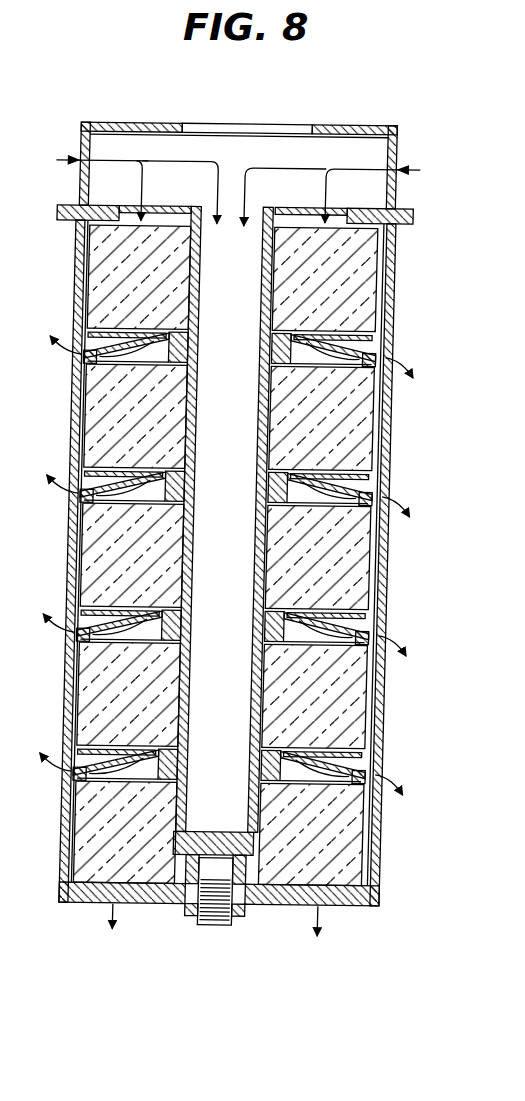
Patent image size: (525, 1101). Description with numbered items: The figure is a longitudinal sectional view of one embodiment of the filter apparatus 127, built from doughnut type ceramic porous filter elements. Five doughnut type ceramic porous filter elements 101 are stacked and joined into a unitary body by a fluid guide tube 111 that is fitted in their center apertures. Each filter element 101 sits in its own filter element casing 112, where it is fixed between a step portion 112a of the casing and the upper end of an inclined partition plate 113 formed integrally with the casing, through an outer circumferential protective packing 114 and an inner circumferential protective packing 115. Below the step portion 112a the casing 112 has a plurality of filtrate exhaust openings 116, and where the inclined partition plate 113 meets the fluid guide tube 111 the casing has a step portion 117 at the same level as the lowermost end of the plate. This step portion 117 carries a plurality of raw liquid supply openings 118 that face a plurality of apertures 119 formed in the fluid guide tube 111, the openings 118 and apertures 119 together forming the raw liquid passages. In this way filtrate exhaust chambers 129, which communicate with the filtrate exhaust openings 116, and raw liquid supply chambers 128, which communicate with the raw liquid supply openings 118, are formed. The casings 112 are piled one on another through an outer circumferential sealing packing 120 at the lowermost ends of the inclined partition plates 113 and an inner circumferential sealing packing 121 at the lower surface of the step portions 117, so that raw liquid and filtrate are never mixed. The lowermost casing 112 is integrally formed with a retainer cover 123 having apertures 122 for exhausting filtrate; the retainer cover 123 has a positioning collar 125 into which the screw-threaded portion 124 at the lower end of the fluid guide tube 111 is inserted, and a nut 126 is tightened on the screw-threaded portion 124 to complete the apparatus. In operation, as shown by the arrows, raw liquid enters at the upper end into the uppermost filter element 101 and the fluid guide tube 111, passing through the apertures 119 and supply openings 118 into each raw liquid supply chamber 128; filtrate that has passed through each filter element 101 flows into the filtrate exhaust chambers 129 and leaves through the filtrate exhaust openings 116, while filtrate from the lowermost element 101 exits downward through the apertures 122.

The doughnut type ceramic porous filter element 101 is at (362, 272).
The fluid guide tube 111 is at (258, 736).
The filter element casing 112 is at (390, 552).
The step portion of the filter element casing 112a is at (386, 338).
The inclined partition plate 113 is at (386, 350).
The outer circumferential protective packing 114 is at (358, 467).
The inner circumferential protective packing 115 is at (370, 447).
The filtrate exhaust opening 116 is at (386, 492).
The step portion 117 is at (330, 630).
The raw liquid supply opening 118 is at (345, 622).
The aperture 119 is at (330, 652).
The outer circumferential sealing packing 120 is at (362, 374).
The inner circumferential sealing packing 121 is at (362, 405).
The aperture 122 is at (347, 905).
The retainer cover 123 is at (272, 905).
The screw-threaded portion 124 is at (198, 918).
The positioning collar 125 is at (176, 905).
The nut 126 is at (238, 918).
The filter apparatus 127 is at (353, 125).
The raw liquid supply chamber 128 is at (330, 800).
The filtrate exhaust chamber 129 is at (320, 762).